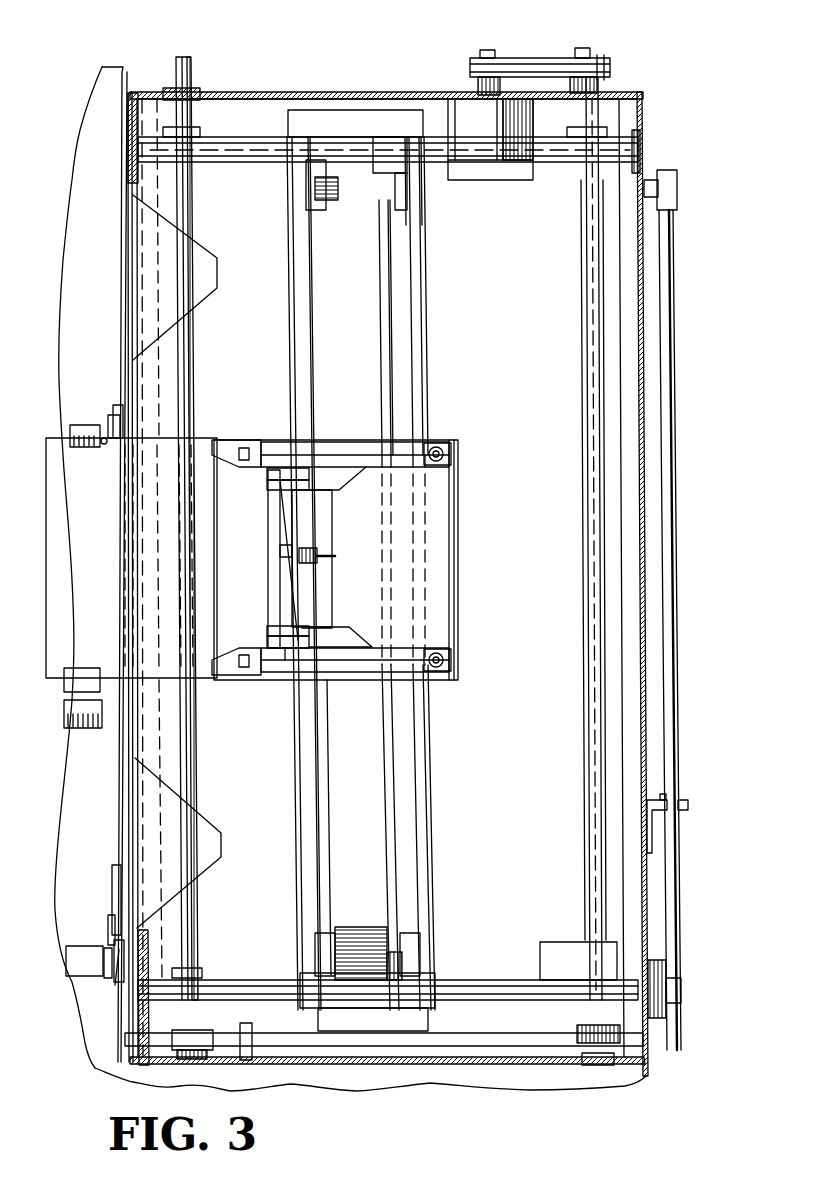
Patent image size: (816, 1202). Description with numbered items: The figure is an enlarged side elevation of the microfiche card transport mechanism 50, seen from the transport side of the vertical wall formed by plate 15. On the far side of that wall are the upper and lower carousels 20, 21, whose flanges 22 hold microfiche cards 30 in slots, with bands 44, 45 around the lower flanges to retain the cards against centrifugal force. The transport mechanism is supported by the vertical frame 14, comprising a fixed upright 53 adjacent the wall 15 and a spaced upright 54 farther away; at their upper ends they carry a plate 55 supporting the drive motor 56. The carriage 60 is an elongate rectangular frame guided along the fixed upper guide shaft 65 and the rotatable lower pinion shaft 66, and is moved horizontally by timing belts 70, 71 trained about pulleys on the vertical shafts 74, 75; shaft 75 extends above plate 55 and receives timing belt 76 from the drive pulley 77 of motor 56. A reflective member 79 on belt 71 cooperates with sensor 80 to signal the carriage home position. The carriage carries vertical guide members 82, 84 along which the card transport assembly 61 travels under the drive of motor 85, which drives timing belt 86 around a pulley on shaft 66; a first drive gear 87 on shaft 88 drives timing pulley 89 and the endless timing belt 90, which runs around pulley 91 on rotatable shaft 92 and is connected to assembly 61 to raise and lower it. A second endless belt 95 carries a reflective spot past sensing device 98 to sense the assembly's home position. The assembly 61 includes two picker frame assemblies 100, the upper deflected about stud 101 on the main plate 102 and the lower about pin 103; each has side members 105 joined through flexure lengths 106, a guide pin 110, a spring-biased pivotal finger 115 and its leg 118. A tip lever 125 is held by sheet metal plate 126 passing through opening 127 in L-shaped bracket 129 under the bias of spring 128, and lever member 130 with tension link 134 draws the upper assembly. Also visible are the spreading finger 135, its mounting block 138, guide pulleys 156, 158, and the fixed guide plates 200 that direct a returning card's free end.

The support strut 14 is at (654, 333).
The plate 15 is at (122, 122).
The upper carousel 20 is at (92, 428).
The lower carousel 21 is at (84, 982).
The flange 22 is at (72, 430).
The microfiche card 30 is at (46, 516).
The band 44 is at (64, 683).
The band 45 is at (66, 960).
The microfiche card transport mechanism 50 is at (352, 82).
The fixed upright 53 is at (160, 368).
The spaced upright 54 is at (646, 442).
The plate 55 is at (292, 88).
The drive motor 56 is at (500, 181).
The carriage 60 is at (444, 777).
The microfiche card transport assembly 61 is at (466, 547).
The upper guide shaft 65 is at (238, 163).
The pinion shaft 66 is at (250, 978).
The belt 70 is at (226, 137).
The belt 71 is at (505, 1048).
The shaft 74 is at (208, 914).
The shaft 75 is at (588, 802).
The timing belt 76 is at (536, 57).
The drive pulley 77 is at (480, 55).
The reflective member 79 is at (370, 1048).
The sensor 80 is at (252, 1060).
The guide member 82 is at (432, 808).
The guide member 84 is at (296, 776).
The motor 85 is at (557, 948).
The timing belt 86 is at (664, 1014).
The first drive gear 87 is at (343, 926).
The shaft 88 is at (366, 926).
The timing pulley 89 is at (416, 932).
The timing belt 90 is at (388, 806).
The pulley 91 is at (372, 210).
The rotatable shaft 92 is at (342, 205).
The second endless belt 95 is at (678, 735).
The sensing device 98 is at (684, 803).
The frame assembly 100 is at (339, 440).
The stud 101 is at (446, 456).
The main plate 102 is at (456, 583).
The pin 103 is at (448, 660).
The side member 105 is at (372, 444).
The flexure length 106 is at (432, 444).
The pin 110 is at (284, 670).
The pivotal finger 115 is at (231, 440).
The leg 118 is at (263, 442).
The tip lever 125 is at (278, 526).
The sheet metal plate 126 is at (282, 557).
The opening 127 is at (312, 547).
The spring 128 is at (322, 551).
The L-shaped bracket 129 is at (335, 568).
The lever member 130 is at (322, 626).
The tension link 134 is at (282, 503).
The spreading finger 135 is at (104, 450).
The mounting block 138 is at (112, 887).
The lower guide pulley 156 is at (115, 988).
The upper guide pulley 158 is at (117, 414).
The guide plate 200 is at (222, 262).